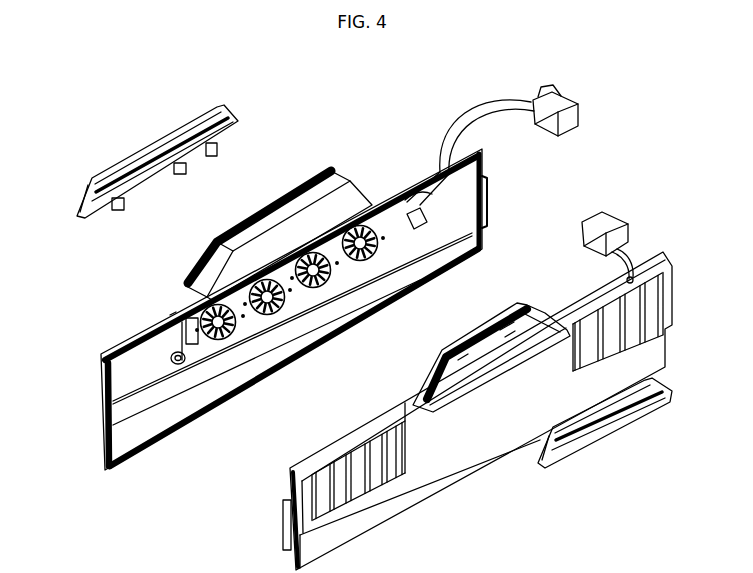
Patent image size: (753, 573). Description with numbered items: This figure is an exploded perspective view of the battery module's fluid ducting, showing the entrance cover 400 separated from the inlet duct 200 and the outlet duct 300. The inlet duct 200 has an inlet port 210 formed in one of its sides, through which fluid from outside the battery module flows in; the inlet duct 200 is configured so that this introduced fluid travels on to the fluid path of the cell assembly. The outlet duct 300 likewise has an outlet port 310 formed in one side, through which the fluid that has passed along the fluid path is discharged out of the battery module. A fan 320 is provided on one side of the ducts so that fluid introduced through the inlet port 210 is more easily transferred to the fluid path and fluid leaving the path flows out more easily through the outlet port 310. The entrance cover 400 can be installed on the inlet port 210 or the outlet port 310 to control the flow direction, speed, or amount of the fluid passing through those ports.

The inlet duct 200 is at (453, 470).
The inlet port 210 is at (544, 300).
The outlet duct 300 is at (101, 382).
The outlet port 310 is at (281, 178).
The fan 320 is at (181, 321).
The entrance cover 400 is at (143, 152).